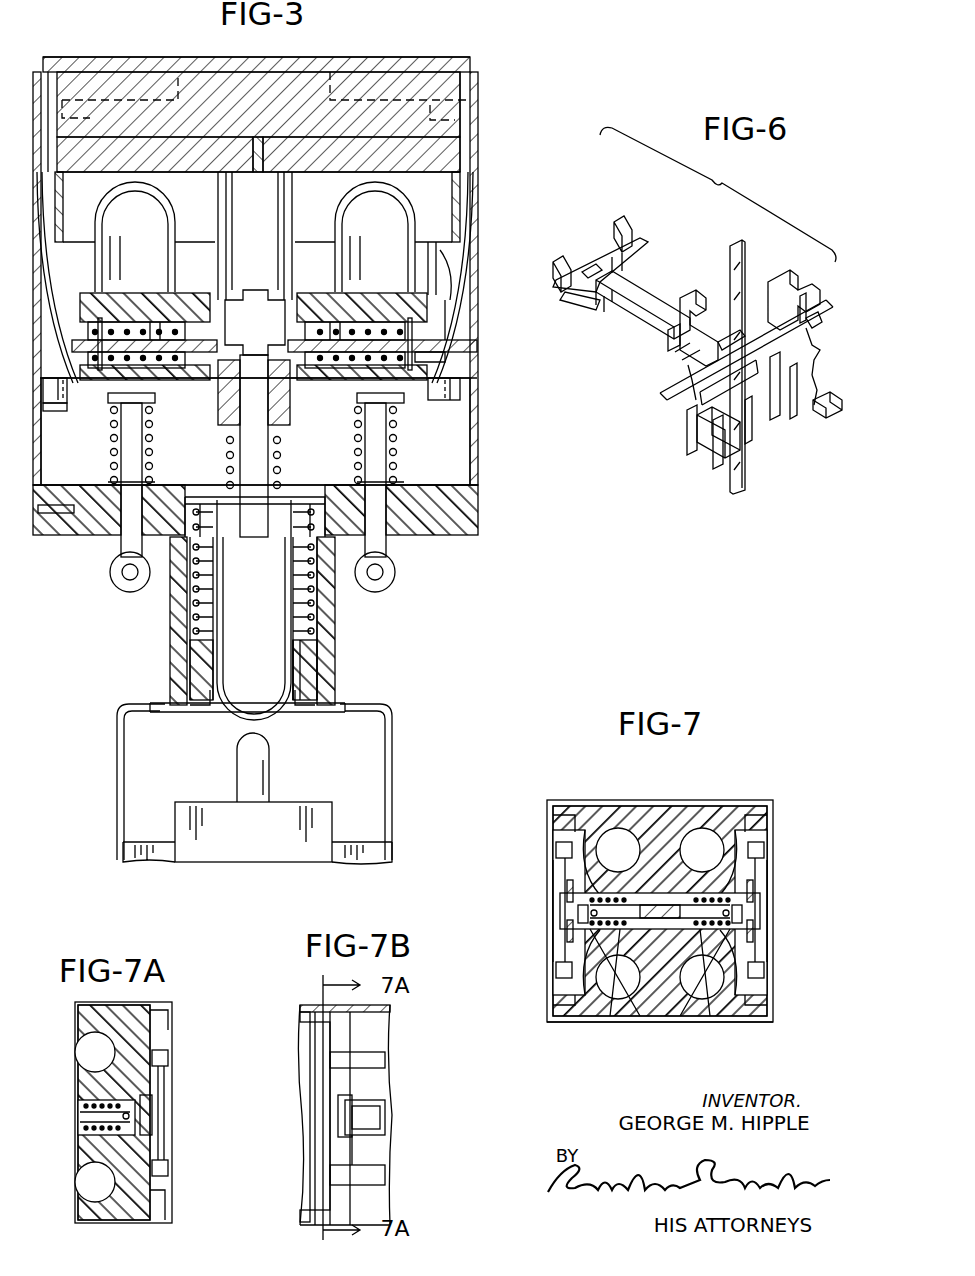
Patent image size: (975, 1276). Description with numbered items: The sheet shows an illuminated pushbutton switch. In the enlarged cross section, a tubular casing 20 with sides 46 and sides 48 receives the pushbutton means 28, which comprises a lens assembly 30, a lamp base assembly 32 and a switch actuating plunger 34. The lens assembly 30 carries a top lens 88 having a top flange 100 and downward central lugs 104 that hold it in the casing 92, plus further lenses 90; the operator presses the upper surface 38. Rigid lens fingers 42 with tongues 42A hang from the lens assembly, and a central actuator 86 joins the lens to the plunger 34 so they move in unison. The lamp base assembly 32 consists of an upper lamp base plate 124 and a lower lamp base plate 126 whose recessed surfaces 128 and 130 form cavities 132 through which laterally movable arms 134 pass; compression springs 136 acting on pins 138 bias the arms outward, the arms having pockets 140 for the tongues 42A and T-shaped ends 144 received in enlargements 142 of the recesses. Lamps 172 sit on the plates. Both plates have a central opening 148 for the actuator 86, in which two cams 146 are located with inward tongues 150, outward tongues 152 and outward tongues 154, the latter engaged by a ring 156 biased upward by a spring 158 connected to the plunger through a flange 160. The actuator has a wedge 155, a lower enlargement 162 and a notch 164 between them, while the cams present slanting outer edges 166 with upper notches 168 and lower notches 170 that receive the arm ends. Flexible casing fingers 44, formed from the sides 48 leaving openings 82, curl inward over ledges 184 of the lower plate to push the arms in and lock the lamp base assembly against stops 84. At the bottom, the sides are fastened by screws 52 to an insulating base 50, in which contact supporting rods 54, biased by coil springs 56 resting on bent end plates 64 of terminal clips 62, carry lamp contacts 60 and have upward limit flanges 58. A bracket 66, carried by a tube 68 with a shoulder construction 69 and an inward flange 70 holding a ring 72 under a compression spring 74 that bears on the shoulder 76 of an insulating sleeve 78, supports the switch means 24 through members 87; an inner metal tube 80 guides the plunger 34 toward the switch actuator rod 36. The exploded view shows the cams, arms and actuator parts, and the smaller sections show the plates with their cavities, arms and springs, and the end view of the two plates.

In FIG. 3, the casing 20 is at (480, 142).
In FIG. 7B, the casing 20 is at (305, 990).
In FIG. 3, the switch means 24 is at (245, 862).
In FIG. 3, the pushbutton means 28 is at (473, 42).
In FIG. 3, the lens assembly 30 is at (472, 96).
In FIG. 3, the lamp base assembly 32 is at (464, 328).
In FIG. 7, the lamp base assembly 32 is at (733, 778).
In FIG. 7A, the lamp base assembly 32 is at (56, 1030).
In FIG. 7B, the lamp base assembly 32 is at (300, 1040).
In FIG. 3, the switch actuating plunger 34 is at (220, 642).
In FIG. 3, the switch means actuator rod 36 is at (262, 772).
In FIG. 3, the upper surface of the lens 38 is at (185, 57).
In FIG. 3, the lens assembly fingers 42 is at (60, 245).
In FIG. 7, the lens assembly fingers 42 is at (566, 914).
In FIG. 7A, the lens assembly fingers 42 is at (152, 1116).
In FIG. 7B, the lens assembly fingers 42 is at (385, 1116).
In FIG. 3, the tongues of the lens fingers 42A is at (482, 338).
In FIG. 7B, the tongues of the lens fingers 42A is at (338, 1116).
In FIG. 3, the casing fingers 44 is at (104, 318).
In FIG. 6, the casing fingers 44 is at (560, 258).
In FIG. 7, the casing fingers 44 is at (556, 850).
In FIG. 7A, the casing fingers 44 is at (168, 1058).
In FIG. 7B, the casing fingers 44 is at (385, 1055).
In FIG. 3, the casing sides 46 is at (470, 506).
In FIG. 7, the casing sides 46 is at (660, 806).
In FIG. 3, the casing sides 48 is at (36, 474).
In FIG. 7, the casing sides 48 is at (553, 1015).
In FIG. 3, the connector supporting base 50 is at (242, 302).
In FIG. 3, the screws 52 is at (68, 536).
In FIG. 3, the electrical contact supporting rods 54 is at (136, 452).
In FIG. 3, the coil spring 56 is at (155, 472).
In FIG. 3, the upward limit flanges 58 is at (112, 568).
In FIG. 3, the lamp energizing contacts 60 is at (152, 405).
In FIG. 3, the terminal connector clip 62 is at (128, 592).
In FIG. 3, the bent end plate 64 is at (112, 480).
In FIG. 3, the bracket 66 is at (392, 797).
In FIG. 3, the tube 68 is at (172, 670).
In FIG. 3, the shoulder construction 69 is at (340, 570).
In FIG. 3, the inward flange 70 is at (292, 482).
In FIG. 3, the ring 72 is at (240, 452).
In FIG. 3, the compression spring 74 is at (330, 612).
In FIG. 3, the shoulder 76 is at (336, 660).
In FIG. 3, the insulating sleeve 78 is at (325, 702).
In FIG. 3, the inner metal tube 80 is at (205, 715).
In FIG. 3, the openings 82 is at (480, 348).
In FIG. 3, the lamp assembly stops 84 is at (440, 395).
In FIG. 7, the lamp assembly stops 84 is at (553, 832).
In FIG. 7B, the lamp assembly stops 84 is at (300, 1016).
In FIG. 3, the central actuator rod 86 is at (252, 522).
In FIG. 6, the central actuator rod 86 is at (746, 265).
In FIG. 7, the central actuator rod 86 is at (645, 903).
In FIG. 3, the switch supporting members 87 is at (160, 862).
In FIG. 3, the top lens 88 is at (357, 84).
In FIG. 3, the lenses 90 is at (88, 22).
In FIG. 3, the casing 92 is at (462, 197).
In FIG. 3, the top flange 100 is at (472, 64).
In FIG. 3, the downward central lugs 104 is at (243, 55).
In FIG. 3, the upper lamp base plate 124 is at (345, 330).
In FIG. 7, the upper lamp base plate 124 is at (630, 893).
In FIG. 7B, the upper lamp base plate 124 is at (355, 1150).
In FIG. 3, the lower lamp base plate 126 is at (332, 372).
In FIG. 7A, the lower lamp base plate 126 is at (85, 1080).
In FIG. 7B, the lower lamp base plate 126 is at (315, 1150).
In FIG. 3, the recessed surfaces of the upper plate 128 is at (160, 308).
In FIG. 7, the recessed surfaces of the upper plate 128 is at (655, 930).
In FIG. 3, the recessed surfaces of the lower plate 130 is at (165, 342).
In FIG. 7A, the recessed surfaces of the lower plate 130 is at (100, 1135).
In FIG. 3, the cavities 132 is at (372, 300).
In FIG. 3, the arms 134 is at (432, 240).
In FIG. 6, the arms 134 is at (640, 292).
In FIG. 7, the arms 134 is at (612, 896).
In FIG. 7A, the arms 134 is at (82, 1118).
In FIG. 3, the compression springs 136 is at (462, 268).
In FIG. 7, the compression springs 136 is at (715, 836).
In FIG. 7A, the compression springs 136 is at (88, 1190).
In FIG. 3, the pins 138 is at (447, 358).
In FIG. 6, the pins 138 is at (610, 312).
In FIG. 7, the pins 138 is at (590, 915).
In FIG. 7A, the pins 138 is at (130, 1116).
In FIG. 6, the pockets 140 is at (598, 262).
In FIG. 7, the pockets 140 is at (566, 898).
In FIG. 7, the enlargements of the recesses 142 is at (595, 1012).
In FIG. 7A, the enlargements of the recesses 142 is at (168, 1030).
In FIG. 6, the T-shaped ends 144 is at (628, 262).
In FIG. 7, the T-shaped ends 144 is at (558, 975).
In FIG. 7A, the T-shaped ends 144 is at (164, 1140).
In FIG. 7B, the T-shaped ends 144 is at (345, 1090).
In FIG. 3, the cams 146 is at (232, 298).
In FIG. 6, the cams 146 is at (690, 355).
In FIG. 3, the central opening 148 is at (280, 298).
In FIG. 7, the central opening 148 is at (655, 903).
In FIG. 3, the inward tongues 150 is at (290, 318).
In FIG. 6, the inward tongues 150 is at (700, 318).
In FIG. 6, the outward tongues 152 is at (686, 425).
In FIG. 6, the outward tongues 154 is at (700, 455).
In FIG. 6, the wedge 155 is at (727, 272).
In FIG. 3, the ring 156 is at (288, 460).
In FIG. 3, the spring 158 is at (220, 605).
In FIG. 3, the flange 160 is at (270, 522).
In FIG. 6, the lower enlargement 162 is at (790, 318).
In FIG. 6, the notch 164 is at (700, 398).
In FIG. 6, the slanting outer edges 166 is at (668, 345).
In FIG. 6, the upper notches 168 is at (694, 296).
In FIG. 6, the lower notches 170 is at (686, 368).
In FIG. 3, the lamps 172 is at (150, 206).
In FIG. 3, the ledges 184 is at (72, 385).
In FIG. 7, the ledges 184 is at (767, 835).
In FIG. 7A, the ledges 184 is at (165, 1185).
In FIG. 7B, the ledges 184 is at (315, 1068).